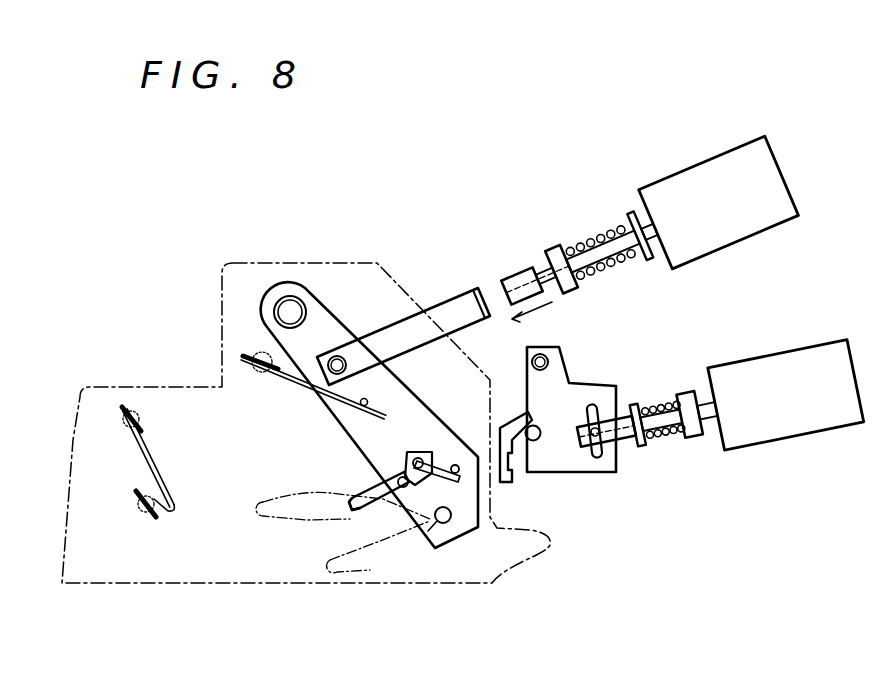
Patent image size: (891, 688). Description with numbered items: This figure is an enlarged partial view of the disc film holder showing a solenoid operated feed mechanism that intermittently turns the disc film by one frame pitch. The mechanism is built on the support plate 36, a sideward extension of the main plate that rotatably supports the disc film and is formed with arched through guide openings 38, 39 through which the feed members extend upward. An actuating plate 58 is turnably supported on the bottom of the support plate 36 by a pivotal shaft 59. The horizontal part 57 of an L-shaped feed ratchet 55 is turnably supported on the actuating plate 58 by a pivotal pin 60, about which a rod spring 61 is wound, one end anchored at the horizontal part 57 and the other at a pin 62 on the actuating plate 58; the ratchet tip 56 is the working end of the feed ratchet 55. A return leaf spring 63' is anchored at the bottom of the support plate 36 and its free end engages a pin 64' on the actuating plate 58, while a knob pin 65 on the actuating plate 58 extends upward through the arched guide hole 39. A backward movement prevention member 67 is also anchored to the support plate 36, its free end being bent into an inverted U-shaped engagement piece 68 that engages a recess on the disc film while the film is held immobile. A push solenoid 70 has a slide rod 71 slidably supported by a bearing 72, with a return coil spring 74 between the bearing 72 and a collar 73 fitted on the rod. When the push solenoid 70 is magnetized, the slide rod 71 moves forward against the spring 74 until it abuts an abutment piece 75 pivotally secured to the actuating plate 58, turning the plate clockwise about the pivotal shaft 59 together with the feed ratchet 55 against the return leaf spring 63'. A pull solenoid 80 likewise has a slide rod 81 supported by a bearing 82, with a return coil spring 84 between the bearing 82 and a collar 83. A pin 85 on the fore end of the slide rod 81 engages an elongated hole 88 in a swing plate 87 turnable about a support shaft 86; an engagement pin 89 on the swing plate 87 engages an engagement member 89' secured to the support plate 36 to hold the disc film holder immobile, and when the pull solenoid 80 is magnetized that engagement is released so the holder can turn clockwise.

The support plate 36 is at (235, 268).
The arched through guide opening 38 is at (299, 517).
The arched through guide opening 39 is at (357, 570).
The L-shaped feed ratchet 55 is at (366, 482).
The pawl tip 56 is at (364, 502).
The horizontal part 57 is at (395, 502).
The actuating plate 58 is at (349, 430).
The pivotal shaft 59 is at (294, 306).
The pivotal pin 60 is at (416, 460).
The rod spring 61 is at (437, 462).
The pin 62 is at (456, 465).
The return leaf spring 63' is at (313, 388).
The pin 64' is at (399, 381).
The knob pin 65 is at (447, 523).
The backward movement prevention member 67 is at (156, 452).
The engagement piece 68 is at (128, 416).
The push solenoid 70 is at (740, 153).
The slide rod 71 is at (518, 278).
The bearing 72 is at (560, 248).
The collar 73 is at (632, 213).
The return coil spring 74 is at (604, 234).
The abutment piece 75 is at (448, 310).
The pull solenoid 80 is at (795, 358).
The slide rod 81 is at (628, 447).
The bearing 82 is at (692, 435).
The collar 83 is at (642, 448).
The return coil spring 84 is at (664, 433).
The pin 85 is at (611, 416).
The support shaft 86 is at (546, 357).
The swing plate 87 is at (572, 395).
The elongated hole 88 is at (596, 460).
The engagement pin 89 is at (548, 451).
The engagement member 89' is at (509, 416).